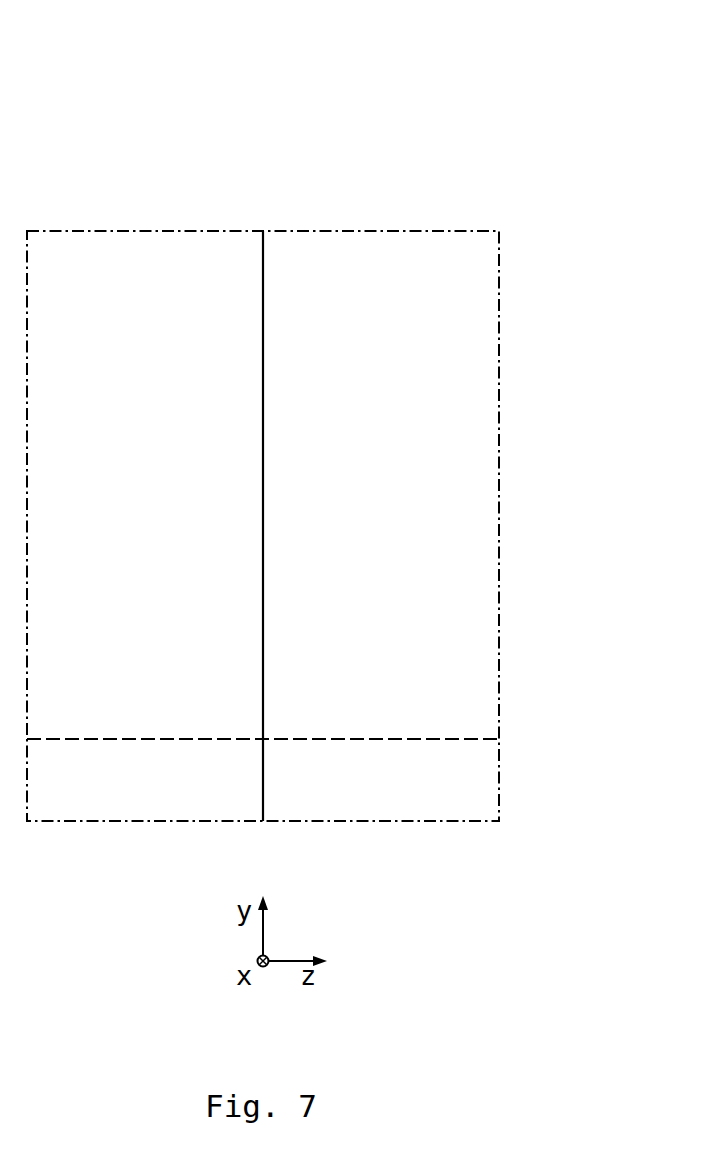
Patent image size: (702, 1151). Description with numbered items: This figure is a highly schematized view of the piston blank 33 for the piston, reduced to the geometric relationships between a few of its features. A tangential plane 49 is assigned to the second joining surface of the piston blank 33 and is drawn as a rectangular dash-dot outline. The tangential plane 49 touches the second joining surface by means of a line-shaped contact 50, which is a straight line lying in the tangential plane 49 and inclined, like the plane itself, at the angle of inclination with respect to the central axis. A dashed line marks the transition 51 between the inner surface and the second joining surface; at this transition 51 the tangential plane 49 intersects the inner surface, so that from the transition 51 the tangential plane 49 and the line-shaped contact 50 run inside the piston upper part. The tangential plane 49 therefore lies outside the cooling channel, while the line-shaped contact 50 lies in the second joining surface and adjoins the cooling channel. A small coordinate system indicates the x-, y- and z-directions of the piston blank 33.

The piston blank 33 is at (262, 86).
The tangential plane 49 is at (390, 230).
The line-shaped contact 50 is at (263, 610).
The transition 51 is at (133, 740).